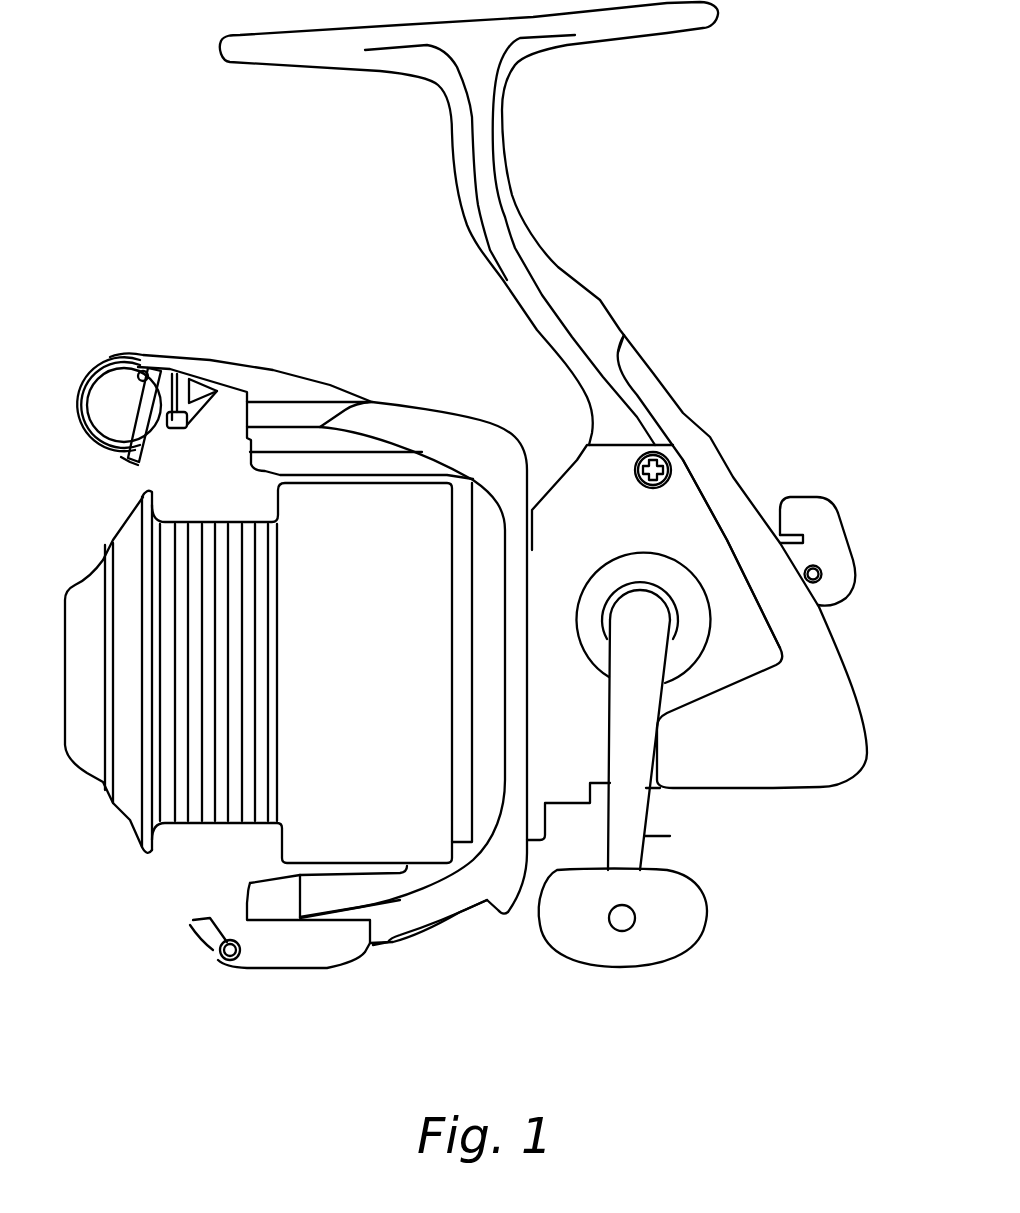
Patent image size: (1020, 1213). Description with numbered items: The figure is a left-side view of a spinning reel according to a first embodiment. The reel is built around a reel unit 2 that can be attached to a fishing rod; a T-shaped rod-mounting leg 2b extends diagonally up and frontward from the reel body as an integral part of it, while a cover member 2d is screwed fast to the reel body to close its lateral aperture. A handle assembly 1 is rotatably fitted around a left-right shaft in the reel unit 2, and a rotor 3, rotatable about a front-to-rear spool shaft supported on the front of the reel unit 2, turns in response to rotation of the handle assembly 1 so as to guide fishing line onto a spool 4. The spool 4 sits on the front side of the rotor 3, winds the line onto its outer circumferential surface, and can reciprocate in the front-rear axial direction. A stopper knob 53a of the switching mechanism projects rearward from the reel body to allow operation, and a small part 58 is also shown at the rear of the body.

The handle assembly 1 is at (648, 837).
The reel unit 2 is at (569, 421).
The rod-mounting leg 2b is at (550, 275).
The cover member 2d is at (680, 510).
The rotor 3 is at (483, 883).
The spool 4 is at (197, 810).
The stopper knob 53a is at (800, 505).
The pin 58 is at (822, 570).